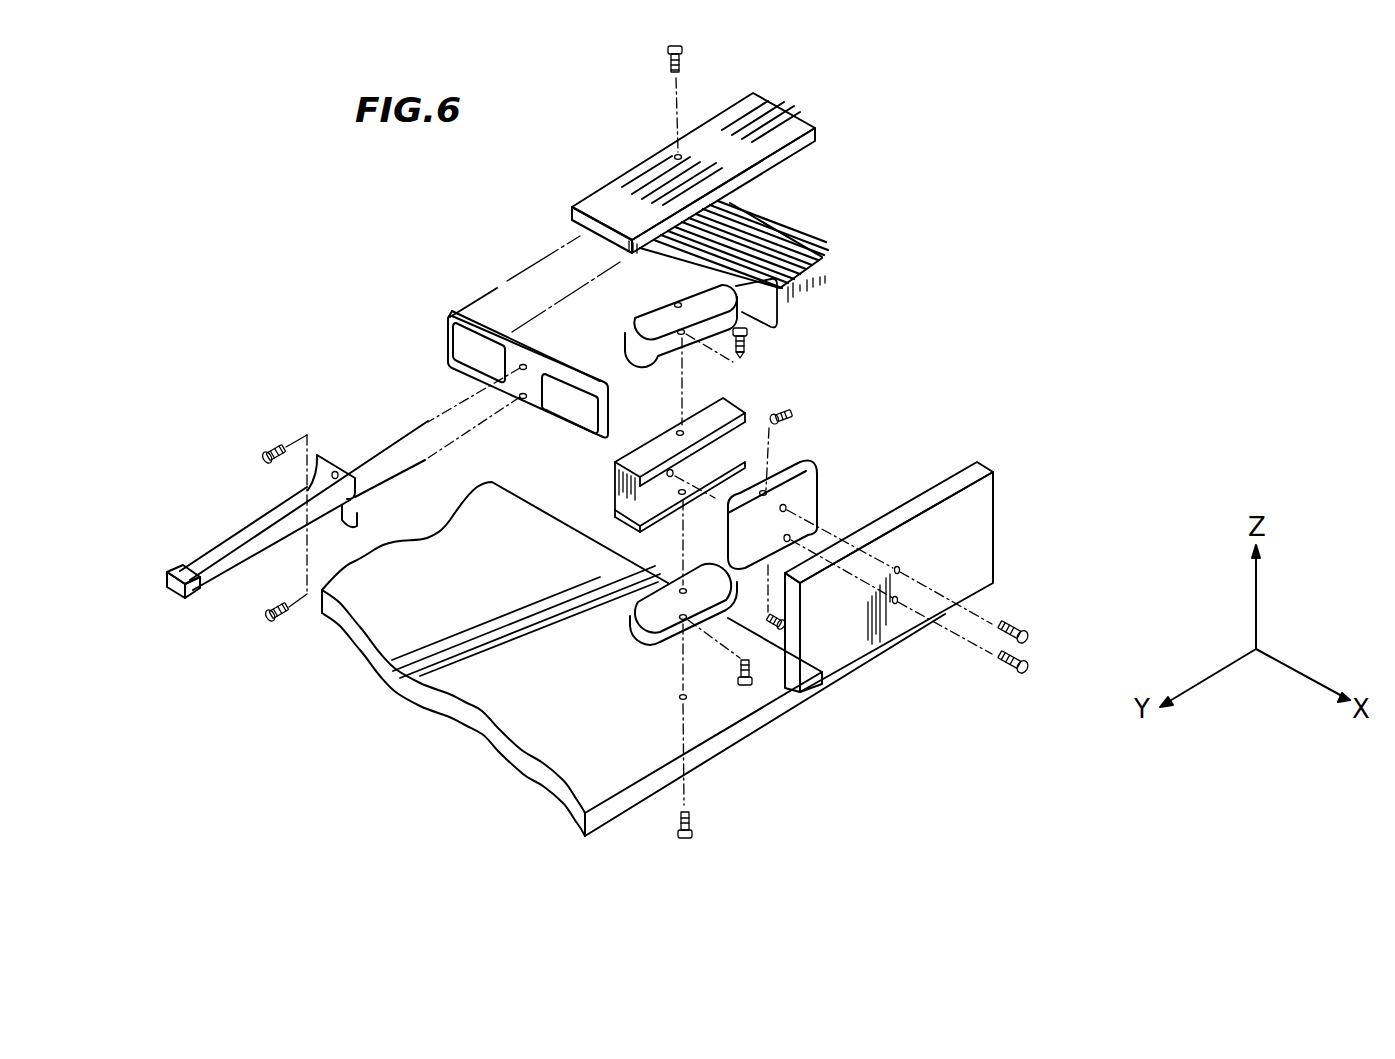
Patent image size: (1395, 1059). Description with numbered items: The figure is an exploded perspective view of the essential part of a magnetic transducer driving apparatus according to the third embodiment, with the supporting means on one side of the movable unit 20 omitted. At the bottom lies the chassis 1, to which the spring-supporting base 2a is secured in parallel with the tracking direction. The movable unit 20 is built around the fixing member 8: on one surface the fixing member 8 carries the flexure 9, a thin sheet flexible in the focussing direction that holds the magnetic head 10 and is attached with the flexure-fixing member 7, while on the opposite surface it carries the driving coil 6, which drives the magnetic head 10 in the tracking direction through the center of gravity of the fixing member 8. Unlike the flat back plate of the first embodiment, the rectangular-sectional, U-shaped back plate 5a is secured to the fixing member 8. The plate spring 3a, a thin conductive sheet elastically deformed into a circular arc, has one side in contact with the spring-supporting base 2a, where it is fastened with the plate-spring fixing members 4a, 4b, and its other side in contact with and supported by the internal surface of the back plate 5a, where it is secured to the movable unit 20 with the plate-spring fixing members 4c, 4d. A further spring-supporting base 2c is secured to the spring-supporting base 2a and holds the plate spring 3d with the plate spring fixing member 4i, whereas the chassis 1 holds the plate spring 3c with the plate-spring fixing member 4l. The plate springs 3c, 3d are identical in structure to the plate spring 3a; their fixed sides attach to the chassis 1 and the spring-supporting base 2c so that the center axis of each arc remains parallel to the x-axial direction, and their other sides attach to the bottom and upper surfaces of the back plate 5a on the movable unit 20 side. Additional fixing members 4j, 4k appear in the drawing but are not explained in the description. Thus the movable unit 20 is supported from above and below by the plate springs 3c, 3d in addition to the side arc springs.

The chassis 1 is at (710, 722).
The spring-supporting base 2a is at (985, 549).
The spring-supporting base 2c is at (790, 126).
The plate spring 3a is at (820, 490).
The plate spring 3c is at (706, 581).
The plate spring 3d is at (720, 290).
The plate-spring fixing member 4a is at (1028, 634).
The plate-spring fixing member 4b is at (1029, 668).
The plate-spring fixing member 4c is at (793, 420).
The plate-spring fixing member 4d is at (740, 622).
The plate spring fixing member 4i is at (684, 52).
The screw 4j is at (752, 337).
The screw 4k is at (753, 682).
The plate-spring fixing member 4l is at (694, 830).
The back plate 5a is at (728, 404).
The driving coil 6 is at (814, 250).
The flexure-fixing member 7 is at (270, 448).
The fixing member 8 is at (410, 324).
The flexure 9 is at (238, 543).
The magnetic head 10 is at (190, 596).
The movable unit 20 is at (818, 197).